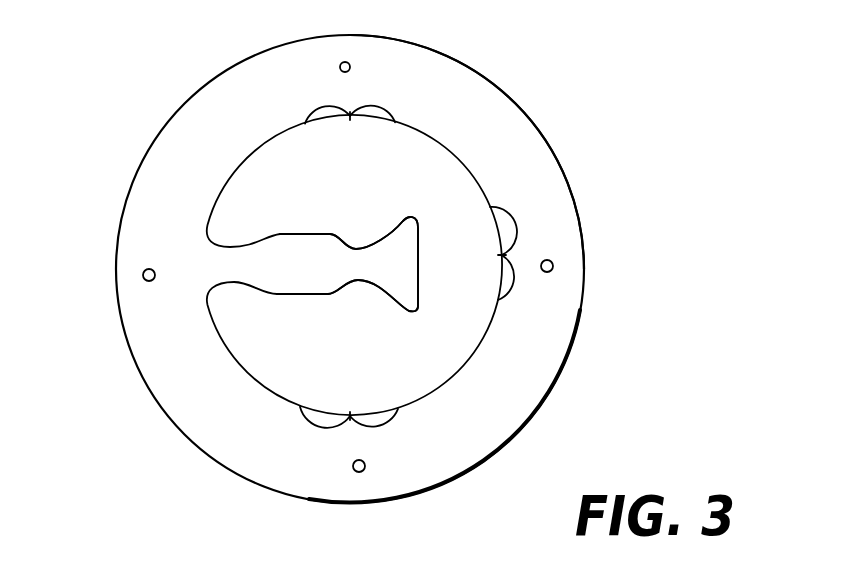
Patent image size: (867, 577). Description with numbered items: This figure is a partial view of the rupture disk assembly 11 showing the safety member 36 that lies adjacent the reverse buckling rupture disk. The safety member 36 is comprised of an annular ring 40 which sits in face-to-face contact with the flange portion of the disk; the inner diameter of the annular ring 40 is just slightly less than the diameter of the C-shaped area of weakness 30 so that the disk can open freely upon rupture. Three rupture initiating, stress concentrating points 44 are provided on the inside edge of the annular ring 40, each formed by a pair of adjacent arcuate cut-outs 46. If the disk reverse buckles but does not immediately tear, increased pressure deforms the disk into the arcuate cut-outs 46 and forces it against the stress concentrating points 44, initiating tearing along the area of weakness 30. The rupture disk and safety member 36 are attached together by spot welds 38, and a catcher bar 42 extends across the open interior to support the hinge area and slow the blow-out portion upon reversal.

The rupture disk assembly 11 is at (524, 78).
The area of weakness 30 is at (253, 150).
The safety member 36 is at (530, 360).
The spot welds 38 is at (342, 64).
The annular ring 40 is at (533, 175).
The catcher bar 42 is at (321, 274).
The stress concentrating points 44 is at (350, 116).
The arcuate cut-outs 46 is at (305, 119).